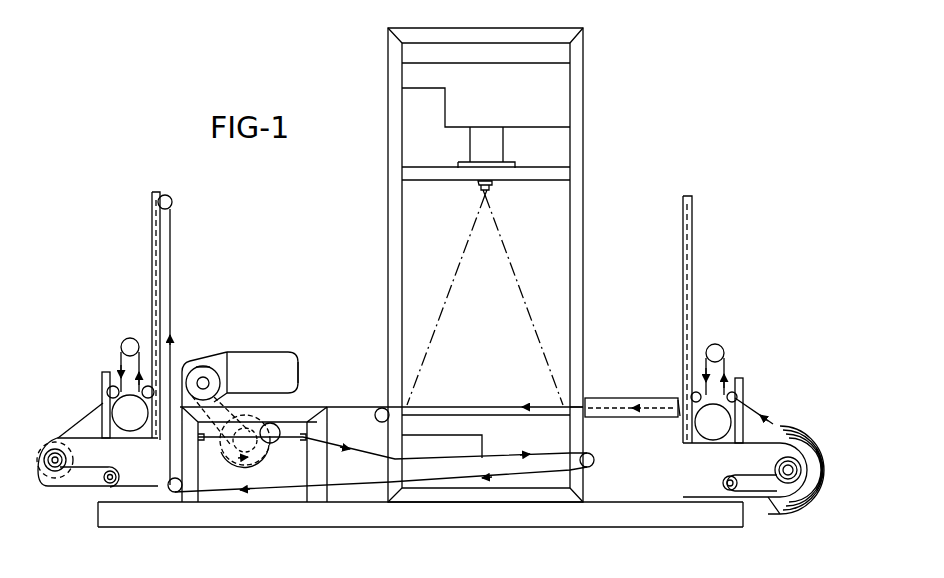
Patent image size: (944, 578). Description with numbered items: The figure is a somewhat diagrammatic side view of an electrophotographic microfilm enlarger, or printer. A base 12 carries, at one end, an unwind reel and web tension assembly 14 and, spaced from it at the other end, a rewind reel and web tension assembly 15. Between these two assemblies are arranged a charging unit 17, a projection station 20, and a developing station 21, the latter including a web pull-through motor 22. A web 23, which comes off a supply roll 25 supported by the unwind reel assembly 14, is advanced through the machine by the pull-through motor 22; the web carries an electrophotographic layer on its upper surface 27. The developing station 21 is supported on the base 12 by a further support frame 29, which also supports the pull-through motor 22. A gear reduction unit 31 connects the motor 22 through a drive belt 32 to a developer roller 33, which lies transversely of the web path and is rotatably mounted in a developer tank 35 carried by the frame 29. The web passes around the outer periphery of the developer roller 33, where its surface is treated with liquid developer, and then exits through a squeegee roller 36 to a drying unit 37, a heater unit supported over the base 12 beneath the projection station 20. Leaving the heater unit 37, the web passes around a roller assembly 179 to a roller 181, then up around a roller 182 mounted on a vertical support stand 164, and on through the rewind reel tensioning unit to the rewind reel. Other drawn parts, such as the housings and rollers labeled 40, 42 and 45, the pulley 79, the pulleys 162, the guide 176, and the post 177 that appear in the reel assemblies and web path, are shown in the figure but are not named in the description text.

The base 12 is at (480, 518).
The unwind reel and web tension assembly 14 is at (748, 361).
The rewind reel and web tension assembly 15 is at (100, 345).
The charging unit 17 is at (648, 396).
The projection station 20 is at (388, 30).
The developing station 21 is at (299, 397).
The web pull-through motor 22 is at (221, 345).
The web 23 is at (451, 404).
The supply roll 25 is at (798, 514).
The upper surface 27 is at (492, 407).
The support frame 29 is at (315, 497).
The gear reduction unit 31 is at (201, 364).
The drive belt 32 is at (228, 392).
The developer roller 33 is at (226, 457).
The developer tank 35 is at (265, 457).
The squeegee roller 36 is at (277, 427).
The drying unit 37 is at (436, 462).
The housing 40 is at (130, 490).
The roller 42 is at (60, 488).
The roller 45 is at (110, 484).
The pulley 79 is at (379, 410).
The guide pulley 162 is at (130, 338).
The vertical support stand 164 is at (152, 224).
The guide 176 is at (678, 392).
The post 177 is at (745, 392).
The roller assembly 179 is at (594, 463).
The roller 181 is at (173, 493).
The roller 182 is at (170, 200).